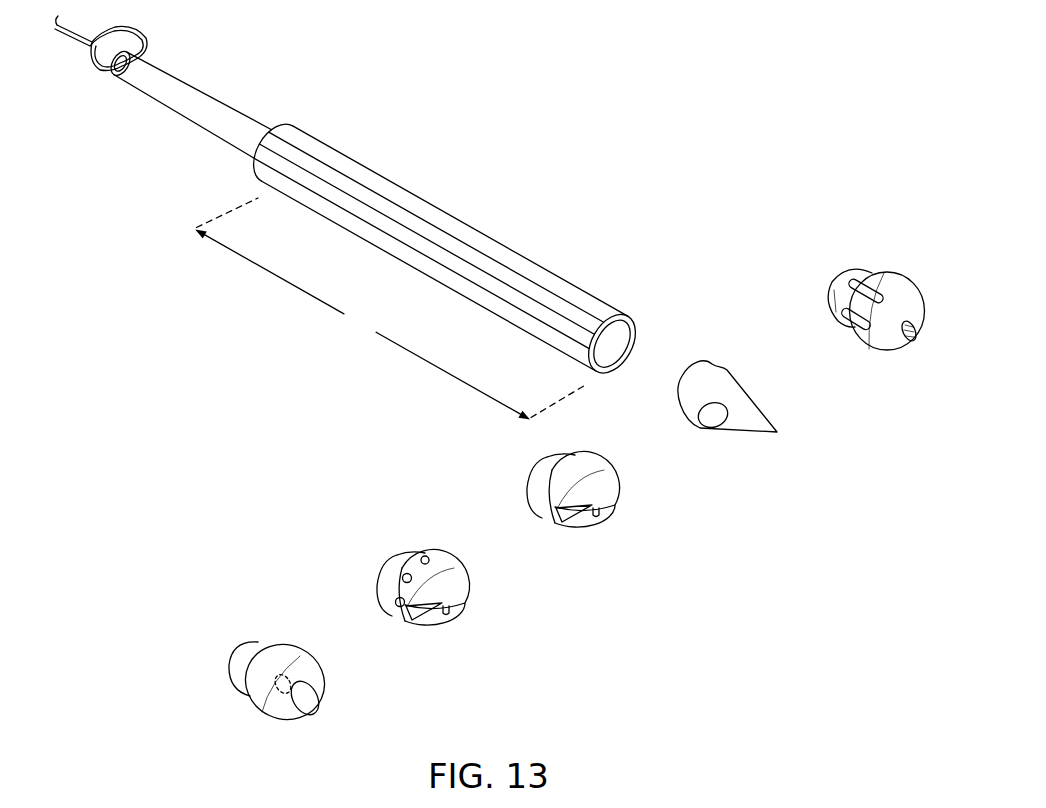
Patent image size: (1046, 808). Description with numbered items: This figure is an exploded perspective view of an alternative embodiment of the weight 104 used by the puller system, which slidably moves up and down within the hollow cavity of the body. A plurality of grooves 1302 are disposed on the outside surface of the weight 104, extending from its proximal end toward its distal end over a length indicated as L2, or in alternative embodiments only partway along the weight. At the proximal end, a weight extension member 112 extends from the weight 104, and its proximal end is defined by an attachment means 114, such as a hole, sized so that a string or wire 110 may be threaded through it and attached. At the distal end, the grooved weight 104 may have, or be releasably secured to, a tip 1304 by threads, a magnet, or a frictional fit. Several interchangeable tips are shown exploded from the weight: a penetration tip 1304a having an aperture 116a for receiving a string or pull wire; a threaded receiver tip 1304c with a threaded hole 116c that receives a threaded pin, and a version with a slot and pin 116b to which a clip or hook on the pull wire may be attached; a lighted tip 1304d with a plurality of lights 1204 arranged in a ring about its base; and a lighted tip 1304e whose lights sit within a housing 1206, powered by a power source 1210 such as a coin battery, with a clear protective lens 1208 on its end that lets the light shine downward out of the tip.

The weight 104 is at (463, 223).
The string or wire 110 is at (80, 38).
The weight extension member 112 is at (204, 87).
The attachment means 114 is at (118, 78).
The grooves 1302 is at (313, 190).
The tip 1304 is at (874, 288).
The penetration tip 1304a is at (738, 381).
The threaded receiver tip 1304c is at (834, 319).
The lighted tip 1304d is at (380, 600).
The lighted tip 1304e is at (266, 667).
The aperture 116a is at (692, 427).
The slot and pin 116b is at (568, 546).
The threaded hole 116c is at (912, 342).
The lights 1204 is at (423, 556).
The housing 1206 is at (292, 653).
The clear protective lens 1208 is at (310, 703).
The power source 1210 is at (233, 694).
The length L2 is at (391, 309).